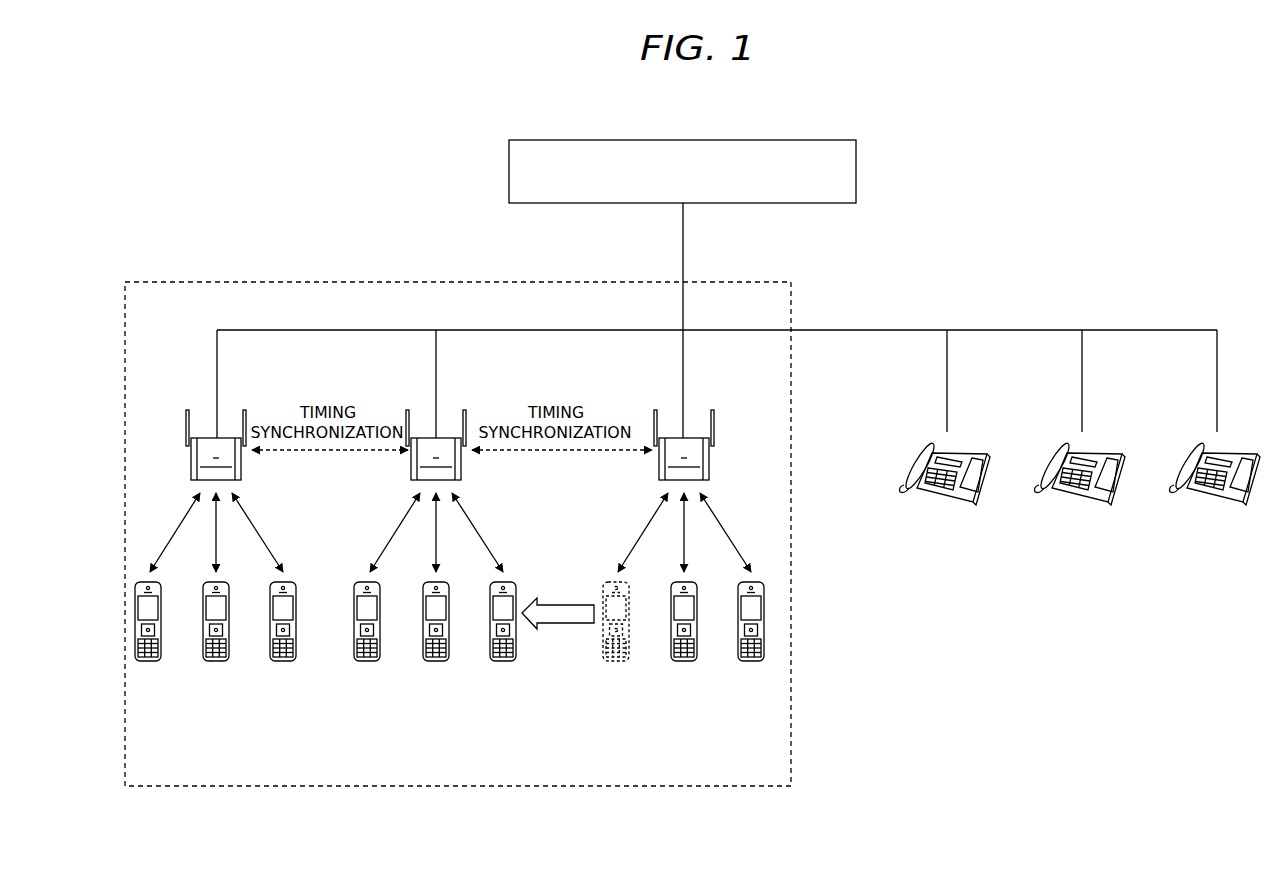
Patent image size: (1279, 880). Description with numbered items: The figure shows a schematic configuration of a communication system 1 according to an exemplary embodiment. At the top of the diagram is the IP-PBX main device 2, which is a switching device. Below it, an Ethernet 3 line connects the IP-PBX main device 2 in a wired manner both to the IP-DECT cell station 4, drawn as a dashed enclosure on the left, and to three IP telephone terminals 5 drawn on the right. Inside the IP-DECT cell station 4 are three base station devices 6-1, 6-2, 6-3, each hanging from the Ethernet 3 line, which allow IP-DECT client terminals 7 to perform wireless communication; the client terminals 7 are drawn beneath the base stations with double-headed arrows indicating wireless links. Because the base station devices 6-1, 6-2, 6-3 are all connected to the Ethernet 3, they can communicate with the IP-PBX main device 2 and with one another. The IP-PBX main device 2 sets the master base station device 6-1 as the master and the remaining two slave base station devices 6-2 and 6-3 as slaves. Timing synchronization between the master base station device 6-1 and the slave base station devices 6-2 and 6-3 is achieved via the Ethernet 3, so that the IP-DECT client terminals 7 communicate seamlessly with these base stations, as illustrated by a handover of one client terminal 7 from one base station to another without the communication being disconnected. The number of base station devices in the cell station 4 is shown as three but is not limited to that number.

The communication system 1 is at (988, 116).
The IP-PBX main device 2 is at (856, 188).
The Ethernet 3 is at (683, 240).
The IP-DECT cell station 4 is at (791, 731).
The IP telephone terminal 5 is at (944, 498).
The master base station device 6-1 is at (225, 438).
The slave base station device 6-2 is at (443, 438).
The slave base station device 6-3 is at (688, 438).
The IP-DECT client terminal 7 is at (216, 662).